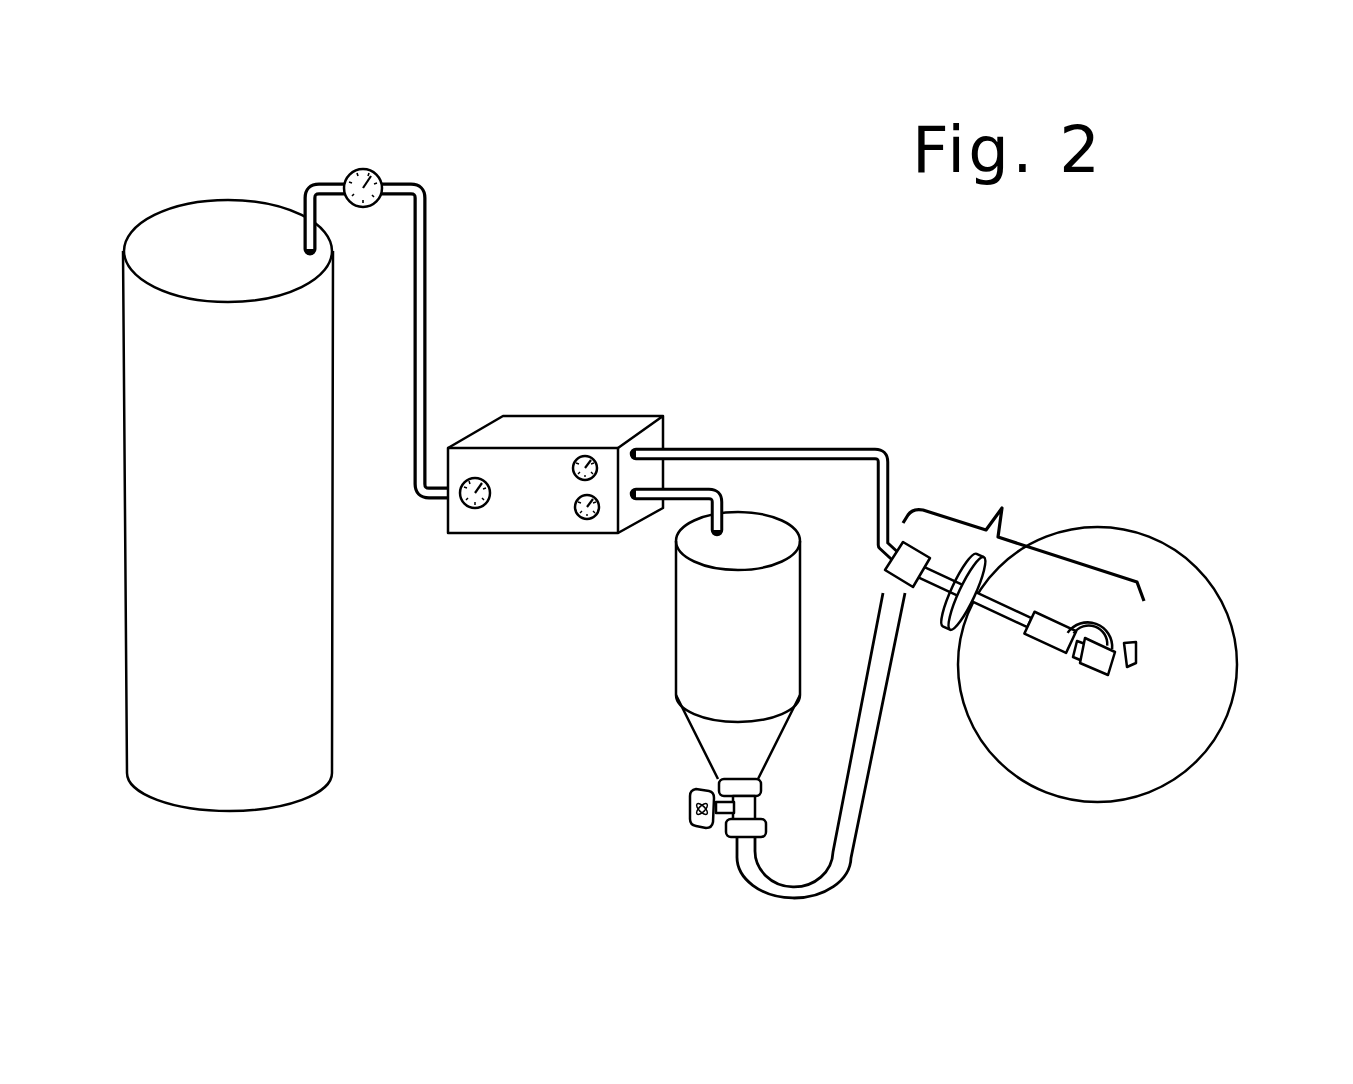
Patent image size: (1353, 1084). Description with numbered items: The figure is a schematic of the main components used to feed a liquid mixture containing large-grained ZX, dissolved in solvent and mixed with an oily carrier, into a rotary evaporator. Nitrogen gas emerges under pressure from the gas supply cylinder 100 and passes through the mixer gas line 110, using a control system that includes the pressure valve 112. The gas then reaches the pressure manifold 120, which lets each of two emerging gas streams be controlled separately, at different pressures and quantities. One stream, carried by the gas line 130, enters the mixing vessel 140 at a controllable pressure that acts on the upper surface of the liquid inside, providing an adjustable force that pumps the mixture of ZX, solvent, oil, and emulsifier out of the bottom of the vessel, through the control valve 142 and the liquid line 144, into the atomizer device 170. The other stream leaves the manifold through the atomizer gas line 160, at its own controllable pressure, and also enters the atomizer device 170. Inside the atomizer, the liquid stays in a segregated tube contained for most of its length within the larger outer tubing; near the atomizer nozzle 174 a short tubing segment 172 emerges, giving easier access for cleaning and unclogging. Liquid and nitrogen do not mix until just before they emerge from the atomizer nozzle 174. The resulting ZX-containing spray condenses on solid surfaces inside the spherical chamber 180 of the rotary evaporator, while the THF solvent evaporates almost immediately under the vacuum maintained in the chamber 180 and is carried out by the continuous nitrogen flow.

The gas supply cylinder 100 is at (179, 198).
The mixer gas line 110 is at (328, 176).
The pressure valve 112 is at (373, 162).
The pressure manifold 120 is at (507, 406).
The gas line 130 is at (676, 505).
The mixing vessel 140 is at (666, 679).
The control valve 142 is at (683, 810).
The liquid line 144 is at (741, 878).
The atomizer gas line 160 is at (847, 382).
The atomizer device 170 is at (1014, 563).
The tubing segment 172 is at (1123, 620).
The atomizer nozzle 174 is at (1141, 663).
The spherical chamber 180 is at (1207, 560).